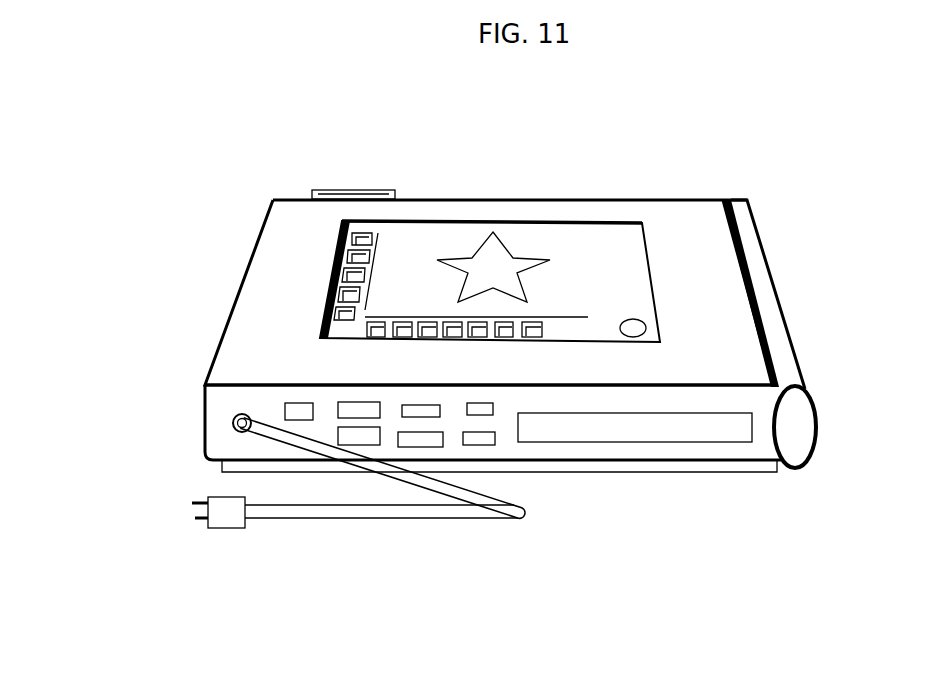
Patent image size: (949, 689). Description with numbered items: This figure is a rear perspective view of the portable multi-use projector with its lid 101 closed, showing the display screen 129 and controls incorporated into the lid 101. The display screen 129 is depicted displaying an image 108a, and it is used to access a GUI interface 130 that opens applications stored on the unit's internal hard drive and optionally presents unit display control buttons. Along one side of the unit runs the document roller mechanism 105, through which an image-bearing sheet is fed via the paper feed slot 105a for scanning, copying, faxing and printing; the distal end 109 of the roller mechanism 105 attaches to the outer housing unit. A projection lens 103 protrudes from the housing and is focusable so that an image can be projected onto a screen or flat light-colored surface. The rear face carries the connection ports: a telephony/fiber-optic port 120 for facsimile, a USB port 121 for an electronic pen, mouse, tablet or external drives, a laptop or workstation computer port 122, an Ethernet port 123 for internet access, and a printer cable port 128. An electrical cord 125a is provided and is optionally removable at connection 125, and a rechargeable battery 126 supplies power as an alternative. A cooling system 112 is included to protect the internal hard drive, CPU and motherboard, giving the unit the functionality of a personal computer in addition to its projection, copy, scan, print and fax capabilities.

The lid 101 is at (273, 290).
The projection lens 103 is at (320, 189).
The document roller mechanism 105 is at (772, 327).
The paper feed slot 105a is at (742, 258).
The image 108a is at (550, 260).
The distal end 109 is at (805, 420).
The cooling system 112 is at (722, 465).
The telephony/fiber-optic port 120 is at (440, 417).
The USB port 121 is at (350, 430).
The laptop or workstation computer port 122 is at (283, 410).
The Ethernet port 123 is at (490, 442).
The removable cord connection 125 is at (233, 424).
The electrical cord 125a is at (490, 523).
The rechargeable battery 126 is at (653, 440).
The printer cable port 128 is at (423, 447).
The display screen 129 is at (527, 232).
The GUI interface 130 is at (337, 238).